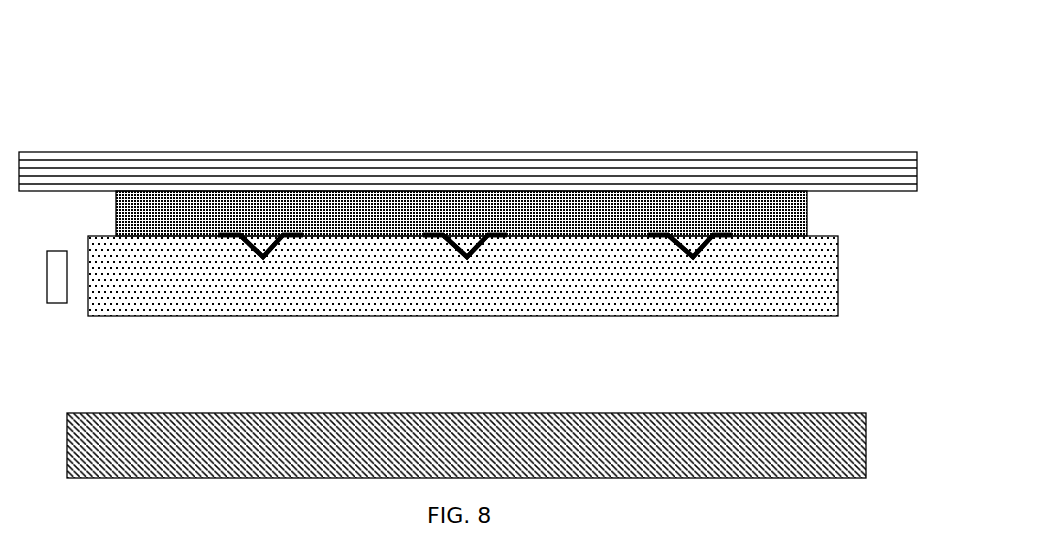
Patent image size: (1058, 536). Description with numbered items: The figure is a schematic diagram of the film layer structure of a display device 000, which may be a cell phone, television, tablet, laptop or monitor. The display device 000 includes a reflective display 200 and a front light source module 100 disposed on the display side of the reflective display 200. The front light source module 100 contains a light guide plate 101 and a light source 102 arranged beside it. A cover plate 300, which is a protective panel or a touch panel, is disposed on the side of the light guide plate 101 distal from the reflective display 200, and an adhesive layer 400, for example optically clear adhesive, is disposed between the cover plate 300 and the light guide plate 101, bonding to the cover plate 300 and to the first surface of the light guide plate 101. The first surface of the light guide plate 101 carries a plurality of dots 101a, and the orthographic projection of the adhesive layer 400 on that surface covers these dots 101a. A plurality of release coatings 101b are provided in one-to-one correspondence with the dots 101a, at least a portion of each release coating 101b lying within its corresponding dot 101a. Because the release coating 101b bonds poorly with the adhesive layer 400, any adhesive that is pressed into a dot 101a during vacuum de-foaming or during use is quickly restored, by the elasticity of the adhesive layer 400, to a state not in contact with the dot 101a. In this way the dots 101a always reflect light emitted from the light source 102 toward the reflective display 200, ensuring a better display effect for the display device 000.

The display device 000 is at (57, 44).
The front light source module 100 is at (442, 323).
The light guide plate 101 is at (154, 303).
The dot 101a is at (267, 243).
The release coating 101b is at (253, 243).
The light source 102 is at (89, 306).
The reflective display 200 is at (705, 425).
The cover plate 300 is at (845, 152).
The adhesive layer 400 is at (808, 197).